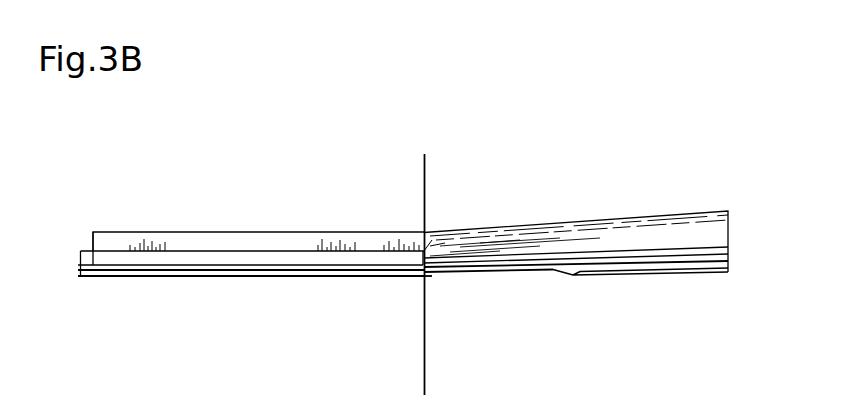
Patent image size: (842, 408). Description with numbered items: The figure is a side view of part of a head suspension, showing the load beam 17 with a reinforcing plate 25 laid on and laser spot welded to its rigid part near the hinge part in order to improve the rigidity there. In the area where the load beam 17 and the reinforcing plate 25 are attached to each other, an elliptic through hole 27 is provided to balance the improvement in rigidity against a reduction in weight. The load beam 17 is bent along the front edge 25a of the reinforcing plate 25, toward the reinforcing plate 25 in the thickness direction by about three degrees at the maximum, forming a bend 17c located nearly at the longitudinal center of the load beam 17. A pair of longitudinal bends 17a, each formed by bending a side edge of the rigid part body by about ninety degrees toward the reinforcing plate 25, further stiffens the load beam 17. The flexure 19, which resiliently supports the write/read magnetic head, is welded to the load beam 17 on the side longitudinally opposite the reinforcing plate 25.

The reinforcing plate 25 is at (126, 255).
The elliptic through hole 27 is at (368, 260).
The front edge of the reinforcing plate 25a is at (428, 258).
The load beam 17 is at (693, 252).
The longitudinal bend 17a is at (632, 230).
The bend 17c is at (430, 282).
The flexure 19 is at (662, 272).